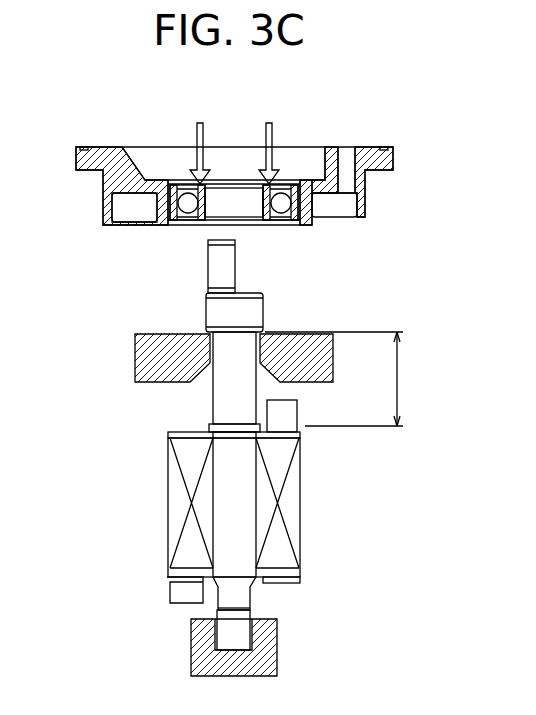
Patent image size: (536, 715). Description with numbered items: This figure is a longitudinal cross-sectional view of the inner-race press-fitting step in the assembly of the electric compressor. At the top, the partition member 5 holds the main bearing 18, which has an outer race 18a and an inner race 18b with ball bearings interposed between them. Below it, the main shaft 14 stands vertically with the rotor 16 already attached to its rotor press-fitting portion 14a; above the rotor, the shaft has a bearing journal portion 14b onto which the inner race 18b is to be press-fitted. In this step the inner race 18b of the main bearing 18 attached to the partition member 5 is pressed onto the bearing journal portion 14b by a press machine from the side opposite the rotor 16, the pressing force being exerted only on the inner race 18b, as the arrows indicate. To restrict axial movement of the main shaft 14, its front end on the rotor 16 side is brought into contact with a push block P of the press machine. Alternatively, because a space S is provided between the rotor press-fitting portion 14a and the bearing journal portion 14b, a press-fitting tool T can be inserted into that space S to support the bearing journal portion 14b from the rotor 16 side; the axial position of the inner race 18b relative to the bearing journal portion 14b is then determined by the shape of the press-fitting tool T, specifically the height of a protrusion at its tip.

The partition member 5 is at (99, 147).
The main bearing 18 is at (230, 199).
The outer race 18a is at (173, 226).
The inner race 18b is at (268, 226).
The main shaft 14 is at (254, 445).
The rotor press-fitting portion 14a is at (238, 477).
The bearing journal portion 14b is at (263, 310).
The rotor 16 is at (168, 500).
The press-fitting tool T is at (143, 334).
The space S is at (341, 379).
The push block P is at (277, 648).